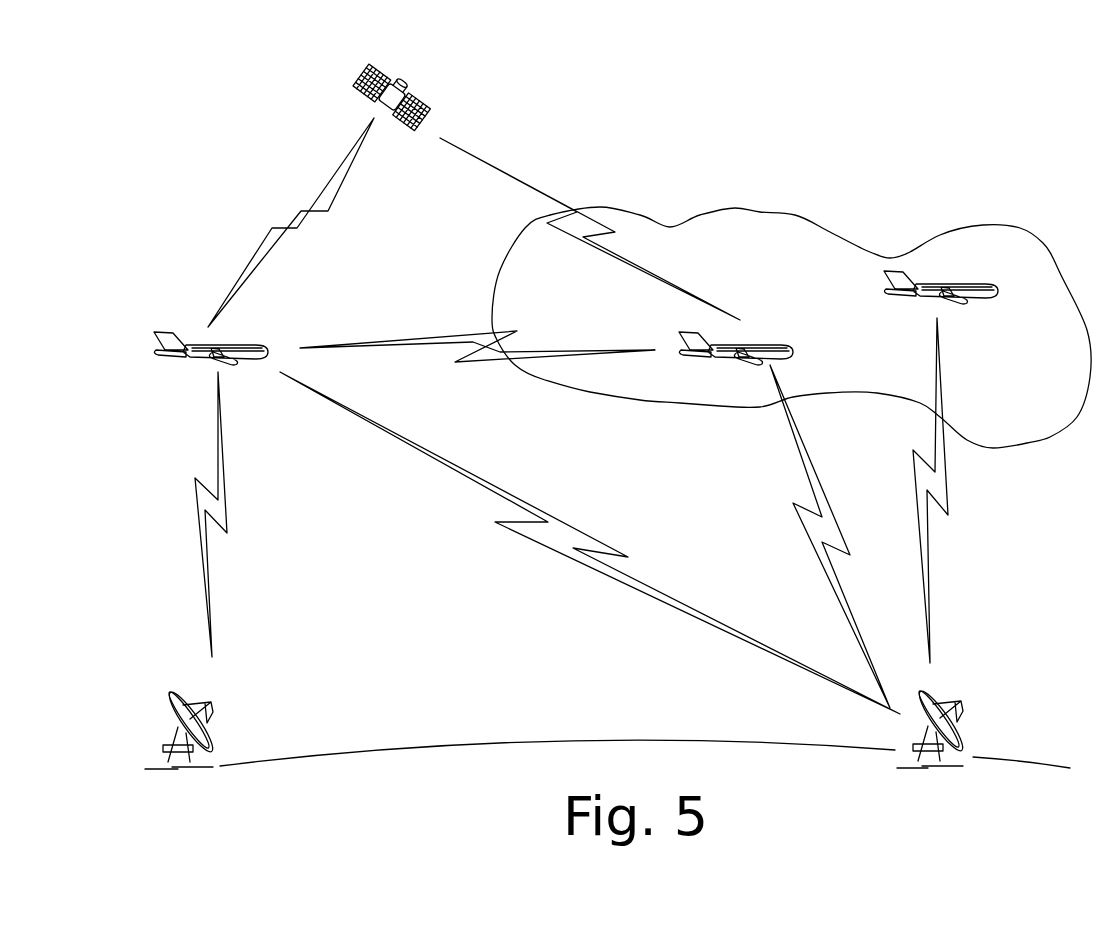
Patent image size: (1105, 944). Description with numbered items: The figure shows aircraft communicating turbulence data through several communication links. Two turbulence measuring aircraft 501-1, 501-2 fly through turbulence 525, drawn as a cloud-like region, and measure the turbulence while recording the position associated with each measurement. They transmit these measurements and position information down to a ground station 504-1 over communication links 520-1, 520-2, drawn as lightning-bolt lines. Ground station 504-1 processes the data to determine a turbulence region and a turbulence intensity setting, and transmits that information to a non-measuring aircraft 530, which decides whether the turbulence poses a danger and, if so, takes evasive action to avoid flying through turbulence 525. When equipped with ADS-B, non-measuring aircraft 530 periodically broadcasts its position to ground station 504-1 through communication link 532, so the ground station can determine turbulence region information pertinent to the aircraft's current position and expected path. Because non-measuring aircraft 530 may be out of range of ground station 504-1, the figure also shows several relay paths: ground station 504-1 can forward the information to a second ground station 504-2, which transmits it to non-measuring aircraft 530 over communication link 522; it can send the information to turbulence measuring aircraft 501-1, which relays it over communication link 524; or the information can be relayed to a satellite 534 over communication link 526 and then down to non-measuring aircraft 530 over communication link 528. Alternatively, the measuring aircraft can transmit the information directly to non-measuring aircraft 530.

The turbulence measuring aircraft 501-1 is at (773, 346).
The turbulence measuring aircraft 501-2 is at (972, 301).
The ground station 504-1 is at (967, 730).
The ground station 504-2 is at (217, 730).
The communication link 520-1 is at (842, 578).
The communication link 520-2 is at (930, 543).
The communication link 522 is at (227, 519).
The communication link 524 is at (428, 334).
The turbulence 525 is at (797, 215).
The communication link 526 is at (548, 192).
The communication link 528 is at (318, 191).
The non-measuring aircraft 530 is at (257, 347).
The communication link 532 is at (565, 522).
The satellite 534 is at (403, 85).